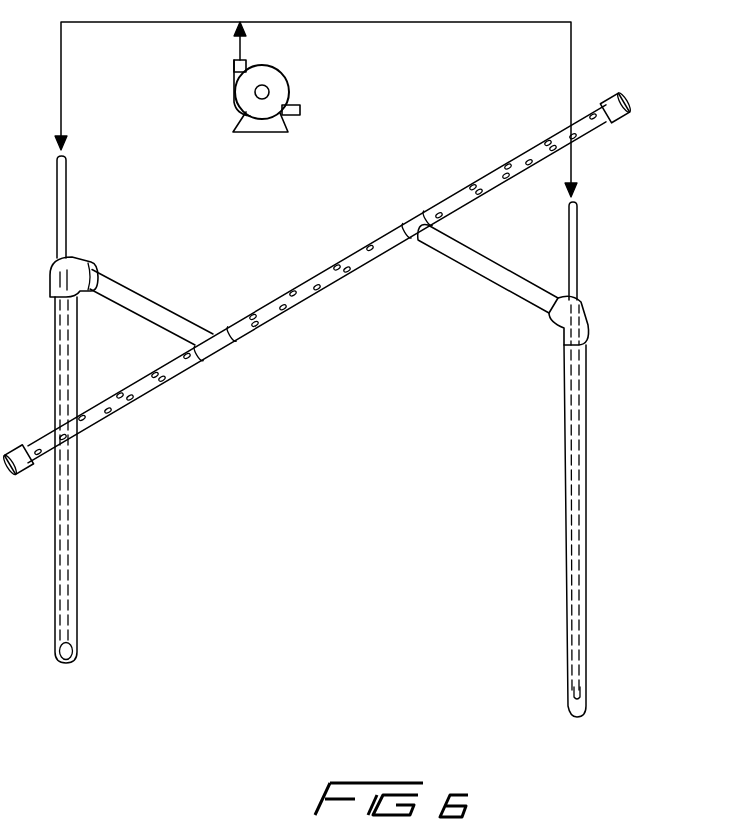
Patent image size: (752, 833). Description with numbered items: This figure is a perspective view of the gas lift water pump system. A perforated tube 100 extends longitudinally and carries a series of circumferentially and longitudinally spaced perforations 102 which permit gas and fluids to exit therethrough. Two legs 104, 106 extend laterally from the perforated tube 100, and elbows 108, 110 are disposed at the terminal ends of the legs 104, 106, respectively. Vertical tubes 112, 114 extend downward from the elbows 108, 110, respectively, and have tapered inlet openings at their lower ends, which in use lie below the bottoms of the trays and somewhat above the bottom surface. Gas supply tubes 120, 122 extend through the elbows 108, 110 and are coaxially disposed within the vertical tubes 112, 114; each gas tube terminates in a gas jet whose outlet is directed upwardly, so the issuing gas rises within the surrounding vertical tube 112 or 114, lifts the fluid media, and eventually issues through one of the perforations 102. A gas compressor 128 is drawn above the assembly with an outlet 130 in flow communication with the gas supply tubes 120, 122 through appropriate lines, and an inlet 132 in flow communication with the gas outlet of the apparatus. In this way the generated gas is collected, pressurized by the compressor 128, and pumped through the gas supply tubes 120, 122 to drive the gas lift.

The perforated tube 100 is at (316, 283).
The perforations 102 is at (386, 236).
The leg 104 is at (130, 293).
The leg 106 is at (500, 278).
The elbow 108 is at (72, 264).
The elbow 110 is at (580, 329).
The vertical tube 112 is at (72, 573).
The vertical tube 114 is at (586, 503).
The gas supply tube 120 is at (67, 182).
The gas supply tube 122 is at (573, 245).
The gas compressor 128 is at (296, 64).
The outlet 130 is at (234, 64).
The inlet 132 is at (300, 109).